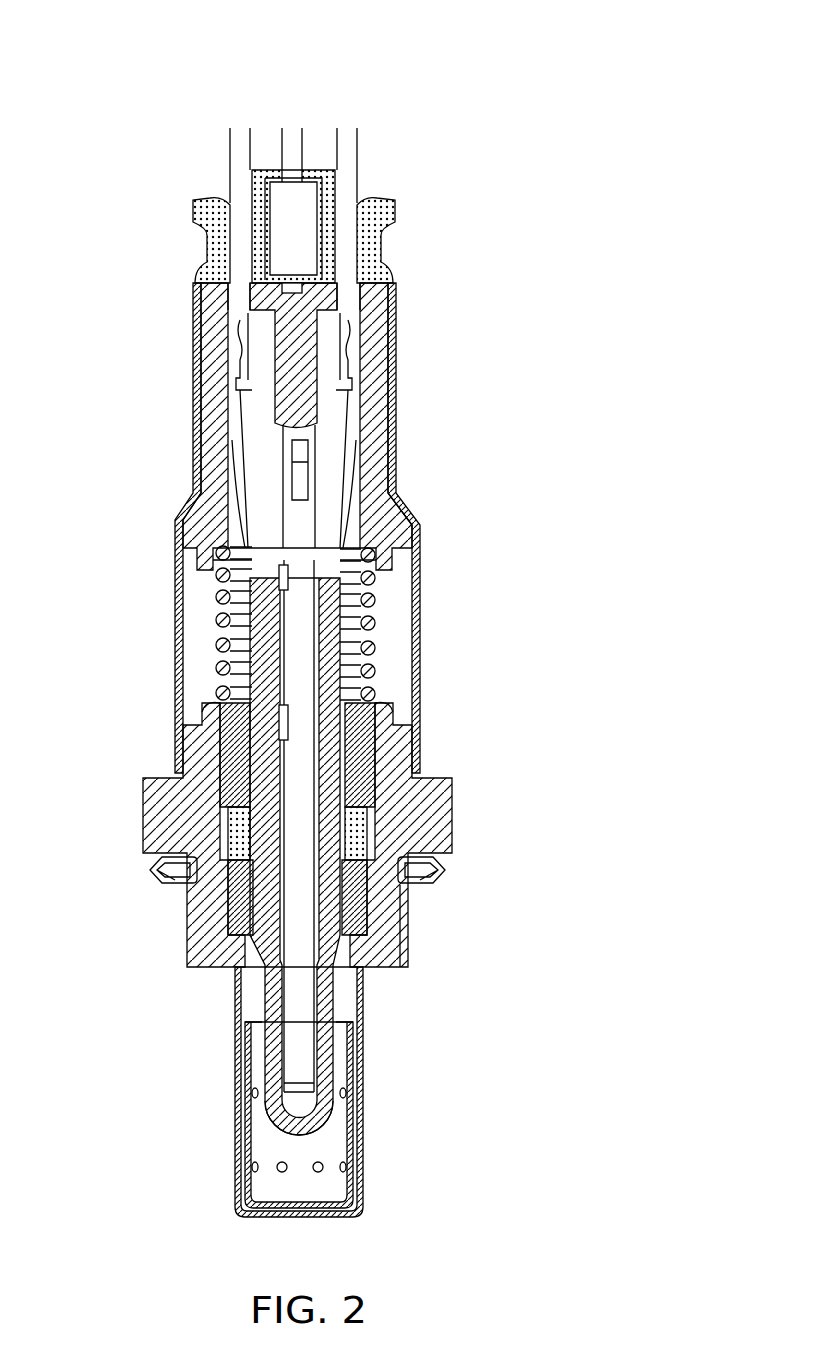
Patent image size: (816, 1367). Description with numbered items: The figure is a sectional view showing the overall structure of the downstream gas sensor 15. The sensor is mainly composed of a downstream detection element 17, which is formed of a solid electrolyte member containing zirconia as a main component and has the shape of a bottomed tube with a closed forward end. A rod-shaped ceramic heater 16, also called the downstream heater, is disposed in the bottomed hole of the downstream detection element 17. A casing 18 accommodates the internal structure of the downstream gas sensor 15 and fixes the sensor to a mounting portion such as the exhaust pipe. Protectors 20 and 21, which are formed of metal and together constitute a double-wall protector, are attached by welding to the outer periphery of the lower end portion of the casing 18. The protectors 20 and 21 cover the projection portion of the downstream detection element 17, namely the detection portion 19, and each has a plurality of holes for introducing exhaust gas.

The downstream gas sensor 15 is at (317, 612).
The ceramic heater 16 is at (312, 1050).
The downstream detection element 17 is at (333, 641).
The casing 18 is at (145, 805).
The detection portion 19 is at (270, 1134).
The protector 20 is at (352, 1145).
The protector 21 is at (363, 1110).